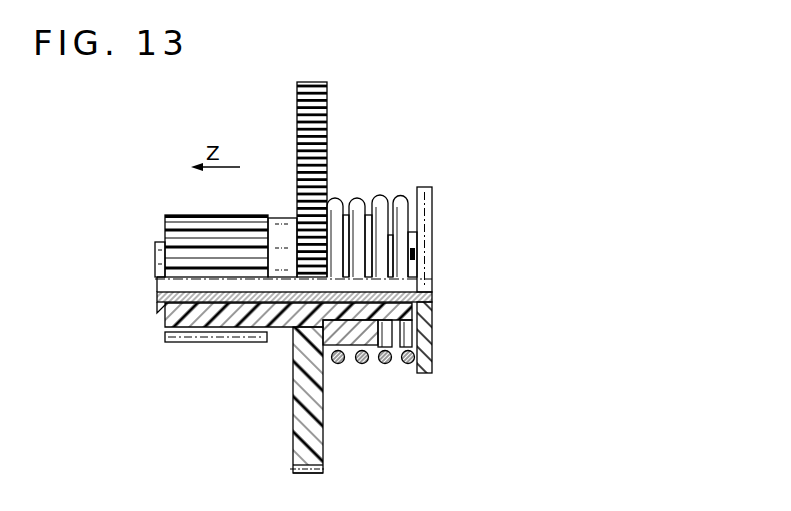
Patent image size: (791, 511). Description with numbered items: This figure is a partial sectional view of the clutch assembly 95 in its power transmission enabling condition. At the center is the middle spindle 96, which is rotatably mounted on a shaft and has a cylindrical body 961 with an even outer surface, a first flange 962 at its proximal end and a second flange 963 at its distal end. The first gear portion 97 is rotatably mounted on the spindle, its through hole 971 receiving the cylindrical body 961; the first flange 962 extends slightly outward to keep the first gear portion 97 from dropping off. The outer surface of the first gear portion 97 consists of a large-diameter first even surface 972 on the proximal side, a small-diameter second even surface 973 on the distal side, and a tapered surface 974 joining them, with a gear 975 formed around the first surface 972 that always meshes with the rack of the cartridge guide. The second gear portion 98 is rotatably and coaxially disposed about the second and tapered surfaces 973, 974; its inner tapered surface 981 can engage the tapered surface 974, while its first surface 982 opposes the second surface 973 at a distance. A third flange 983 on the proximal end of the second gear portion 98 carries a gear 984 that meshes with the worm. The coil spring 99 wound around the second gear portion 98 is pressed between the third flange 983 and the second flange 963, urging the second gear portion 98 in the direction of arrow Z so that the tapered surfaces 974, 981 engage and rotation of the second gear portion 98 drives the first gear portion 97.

The clutch assembly 95 is at (354, 160).
The middle spindle 96 is at (423, 294).
The cylindrical body 961 is at (267, 292).
The first flange 962 is at (158, 309).
The second flange 963 is at (432, 368).
The first gear portion 97 is at (160, 332).
The through hole 971 is at (181, 295).
The first even surface 972 is at (290, 333).
The second even surface 973 is at (406, 365).
The tapered surface 974 is at (292, 330).
The gear 975 is at (209, 334).
The second gear portion 98 is at (329, 412).
The tapered surface 981 is at (295, 378).
The first surface 982 is at (341, 364).
The third flange 983 is at (293, 449).
The gear 984 is at (324, 469).
The coil spring 99 is at (386, 366).